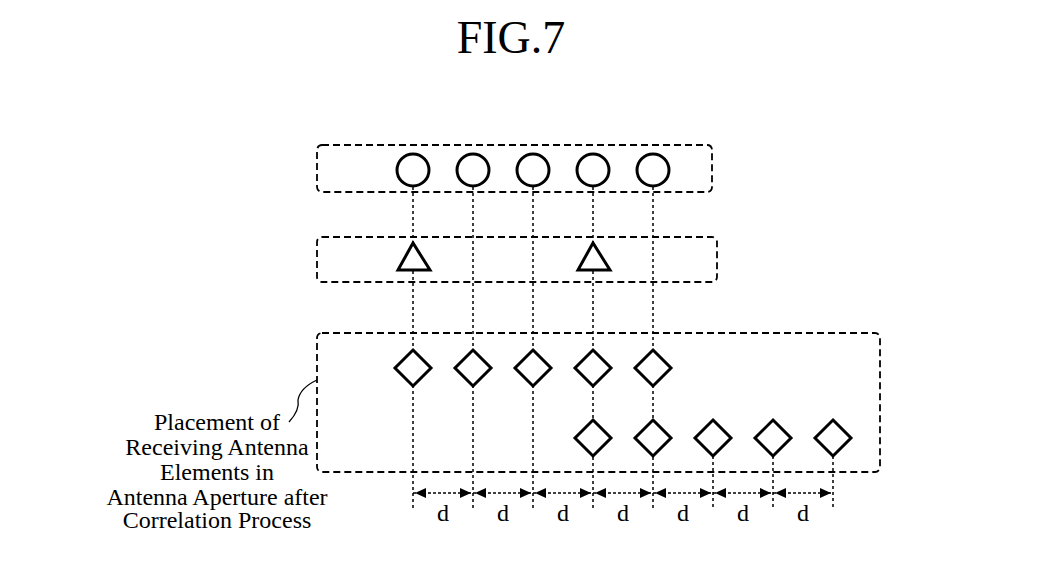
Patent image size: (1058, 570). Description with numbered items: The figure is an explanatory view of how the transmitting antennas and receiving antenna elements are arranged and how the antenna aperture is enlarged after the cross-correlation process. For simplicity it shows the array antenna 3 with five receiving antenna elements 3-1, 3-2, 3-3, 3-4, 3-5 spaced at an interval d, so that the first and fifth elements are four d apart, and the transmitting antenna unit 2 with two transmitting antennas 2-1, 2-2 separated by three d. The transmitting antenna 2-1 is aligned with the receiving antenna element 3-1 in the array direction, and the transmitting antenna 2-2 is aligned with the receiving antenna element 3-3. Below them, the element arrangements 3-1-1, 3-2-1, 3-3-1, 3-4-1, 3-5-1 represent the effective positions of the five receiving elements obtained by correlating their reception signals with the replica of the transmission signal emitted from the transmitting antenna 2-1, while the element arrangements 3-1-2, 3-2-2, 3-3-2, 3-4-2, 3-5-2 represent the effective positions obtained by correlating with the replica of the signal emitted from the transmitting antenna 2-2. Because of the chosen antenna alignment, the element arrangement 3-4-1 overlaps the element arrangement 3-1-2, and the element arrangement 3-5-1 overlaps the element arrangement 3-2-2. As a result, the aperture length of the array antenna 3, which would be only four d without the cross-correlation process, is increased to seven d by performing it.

The array antenna 3 is at (317, 170).
The transmitting antenna unit 2 is at (317, 256).
The receiving antenna element 3-1 is at (404, 158).
The receiving antenna element 3-2 is at (464, 158).
The receiving antenna element 3-3 is at (524, 158).
The receiving antenna element 3-4 is at (584, 158).
The receiving antenna element 3-5 is at (644, 158).
The transmitting antenna 2-1 is at (405, 256).
The transmitting antenna 2-2 is at (600, 256).
The element arrangement 3-1-1 is at (403, 360).
The element arrangement 3-2-1 is at (464, 360).
The element arrangement 3-3-1 is at (542, 360).
The element arrangement 3-4-1 is at (602, 360).
The element arrangement 3-5-1 is at (663, 360).
The element arrangement 3-1-2 is at (584, 430).
The element arrangement 3-2-2 is at (645, 430).
The element arrangement 3-3-2 is at (721, 429).
The element arrangement 3-4-2 is at (781, 429).
The element arrangement 3-5-2 is at (841, 429).